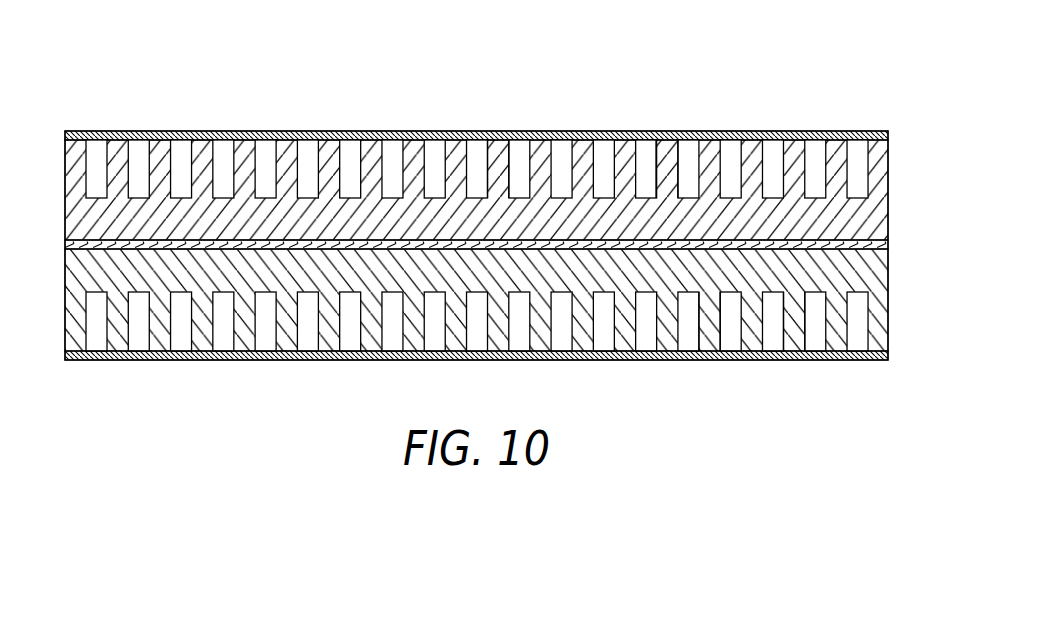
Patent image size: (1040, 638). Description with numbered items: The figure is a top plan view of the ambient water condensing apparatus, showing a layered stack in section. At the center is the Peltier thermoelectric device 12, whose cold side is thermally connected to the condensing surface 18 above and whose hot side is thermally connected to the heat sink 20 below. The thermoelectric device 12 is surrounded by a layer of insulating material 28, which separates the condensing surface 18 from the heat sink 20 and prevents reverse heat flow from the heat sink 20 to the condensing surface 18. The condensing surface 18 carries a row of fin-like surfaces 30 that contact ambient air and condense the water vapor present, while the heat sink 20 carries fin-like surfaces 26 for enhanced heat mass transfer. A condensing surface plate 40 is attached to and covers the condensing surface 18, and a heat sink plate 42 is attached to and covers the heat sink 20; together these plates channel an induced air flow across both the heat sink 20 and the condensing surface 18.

The Peltier thermoelectric device 12 is at (398, 245).
The condensing surface 18 is at (888, 208).
The heat sink 20 is at (888, 283).
The fin-like surfaces 26 is at (703, 327).
The layer of insulating material 28 is at (888, 243).
The fin-like surfaces 30 is at (495, 168).
The condensing surface plate 40 is at (219, 131).
The heat sink plate 42 is at (223, 360).